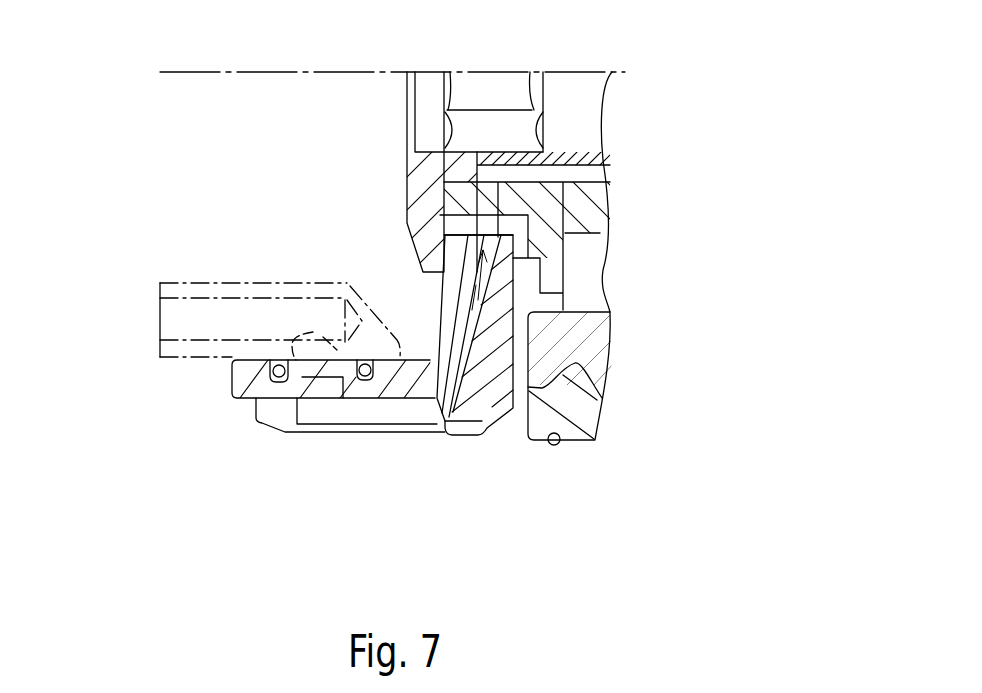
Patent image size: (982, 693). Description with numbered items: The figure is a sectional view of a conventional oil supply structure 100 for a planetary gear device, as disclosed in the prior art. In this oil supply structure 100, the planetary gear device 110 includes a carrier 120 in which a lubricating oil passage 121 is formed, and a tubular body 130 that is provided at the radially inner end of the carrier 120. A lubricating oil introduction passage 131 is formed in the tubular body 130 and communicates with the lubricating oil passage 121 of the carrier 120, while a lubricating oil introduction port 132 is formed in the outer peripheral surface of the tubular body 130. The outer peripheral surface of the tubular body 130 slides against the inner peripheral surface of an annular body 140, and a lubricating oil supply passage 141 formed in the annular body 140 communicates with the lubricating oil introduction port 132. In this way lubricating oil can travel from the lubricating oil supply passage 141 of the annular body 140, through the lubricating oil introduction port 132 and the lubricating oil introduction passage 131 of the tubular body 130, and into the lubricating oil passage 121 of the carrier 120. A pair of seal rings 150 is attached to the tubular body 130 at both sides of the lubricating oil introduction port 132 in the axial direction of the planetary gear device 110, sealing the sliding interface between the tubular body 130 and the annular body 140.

The oil supply structure 100 is at (153, 143).
The planetary gear device 110 is at (517, 435).
The carrier 120 is at (394, 276).
The lubricating oil passage 121 is at (463, 330).
The tubular body 130 is at (263, 467).
The lubricating oil introduction passage 131 is at (343, 408).
The lubricating oil introduction port 132 is at (322, 368).
The annular body 140 is at (221, 246).
The lubricating oil supply passage 141 is at (205, 300).
The seal rings 150 is at (280, 376).